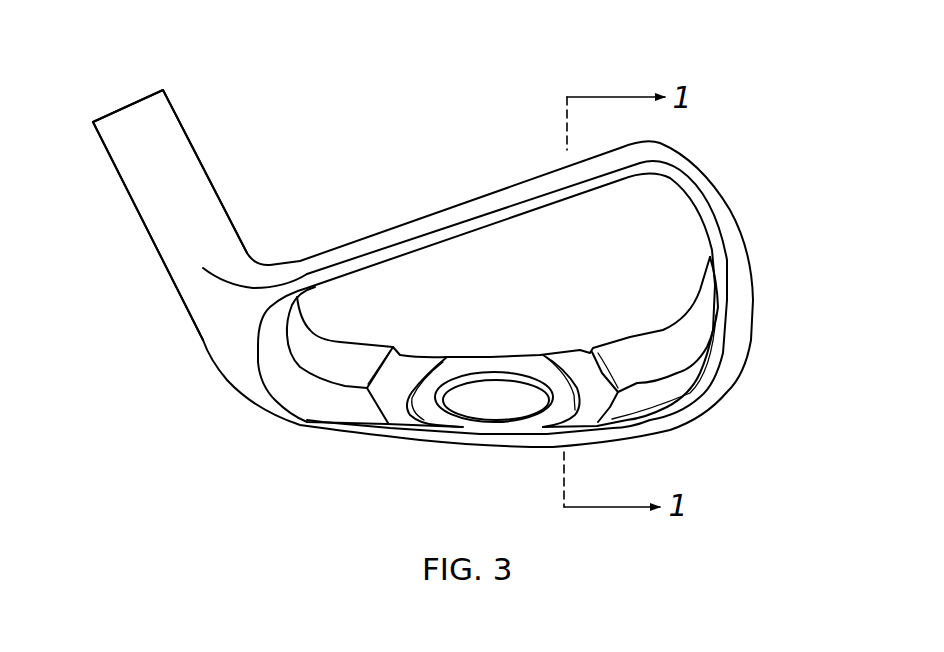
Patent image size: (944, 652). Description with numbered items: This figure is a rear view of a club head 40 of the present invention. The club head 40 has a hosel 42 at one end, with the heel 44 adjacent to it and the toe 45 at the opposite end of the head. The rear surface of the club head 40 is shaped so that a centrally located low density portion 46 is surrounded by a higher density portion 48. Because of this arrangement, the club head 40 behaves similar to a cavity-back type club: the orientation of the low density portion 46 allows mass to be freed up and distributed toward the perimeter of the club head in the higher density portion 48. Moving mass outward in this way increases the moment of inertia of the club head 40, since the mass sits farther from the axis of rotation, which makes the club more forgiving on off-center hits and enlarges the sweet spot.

The club head 40 is at (450, 148).
The hosel 42 is at (153, 218).
The heel 44 is at (203, 347).
The toe 45 is at (753, 315).
The low density portion 46 is at (713, 270).
The higher density portion 48 is at (320, 395).